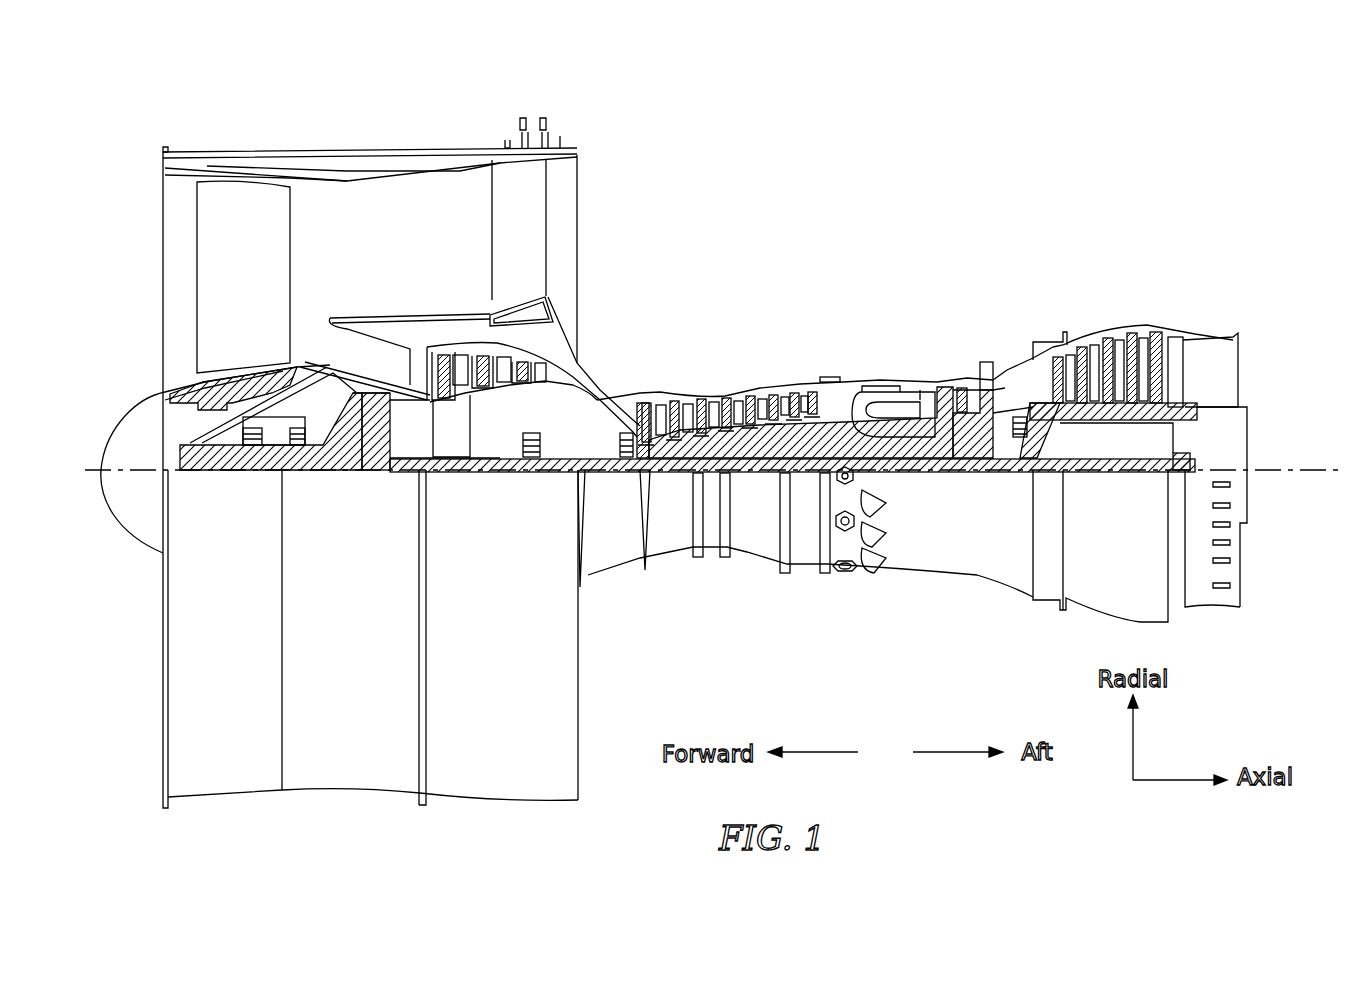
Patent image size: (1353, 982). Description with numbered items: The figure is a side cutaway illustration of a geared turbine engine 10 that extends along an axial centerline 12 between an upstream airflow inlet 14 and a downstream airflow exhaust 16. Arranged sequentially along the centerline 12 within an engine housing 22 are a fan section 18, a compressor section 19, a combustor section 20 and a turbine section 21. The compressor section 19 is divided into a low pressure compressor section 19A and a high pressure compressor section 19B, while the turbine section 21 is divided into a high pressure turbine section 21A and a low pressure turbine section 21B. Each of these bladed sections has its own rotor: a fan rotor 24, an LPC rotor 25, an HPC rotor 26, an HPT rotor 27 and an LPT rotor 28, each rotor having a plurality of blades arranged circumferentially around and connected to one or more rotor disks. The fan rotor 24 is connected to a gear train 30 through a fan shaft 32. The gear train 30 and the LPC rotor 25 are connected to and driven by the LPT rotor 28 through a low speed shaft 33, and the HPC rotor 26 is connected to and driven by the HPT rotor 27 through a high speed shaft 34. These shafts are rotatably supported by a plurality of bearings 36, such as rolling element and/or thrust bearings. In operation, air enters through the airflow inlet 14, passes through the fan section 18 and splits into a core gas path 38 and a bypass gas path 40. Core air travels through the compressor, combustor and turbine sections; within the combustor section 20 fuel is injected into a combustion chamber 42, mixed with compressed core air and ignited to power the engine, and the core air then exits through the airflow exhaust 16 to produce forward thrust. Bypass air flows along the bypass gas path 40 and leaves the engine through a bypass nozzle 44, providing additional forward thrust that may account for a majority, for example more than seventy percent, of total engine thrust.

The geared turbine engine 10 is at (128, 133).
The axial centerline 12 is at (1300, 474).
The airflow inlet 14 is at (163, 228).
The airflow exhaust 16 is at (1240, 368).
The fan section 18 is at (163, 130).
The compressor section 19 is at (410, 70).
The low pressure compressor section 19A is at (580, 117).
The high pressure compressor section 19B is at (800, 310).
The combustor section 20 is at (930, 310).
The turbine section 21 is at (935, 238).
The high pressure turbine section 21A is at (1010, 310).
The low pressure turbine section 21B is at (1197, 310).
The engine housing 22 is at (602, 585).
The fan rotor 24 is at (163, 390).
The LPC rotor 25 is at (485, 410).
The HPC rotor 26 is at (748, 430).
The HPT rotor 27 is at (960, 447).
The LPT rotor 28 is at (1113, 417).
The gear train 30 is at (378, 462).
The fan shaft 32 is at (233, 470).
The low speed shaft 33 is at (803, 475).
The high speed shaft 34 is at (897, 450).
The bearings 36 is at (275, 435).
The core gas path 38 is at (600, 397).
The bypass gas path 40 is at (395, 247).
The combustion chamber 42 is at (888, 405).
The bypass nozzle 44 is at (577, 210).